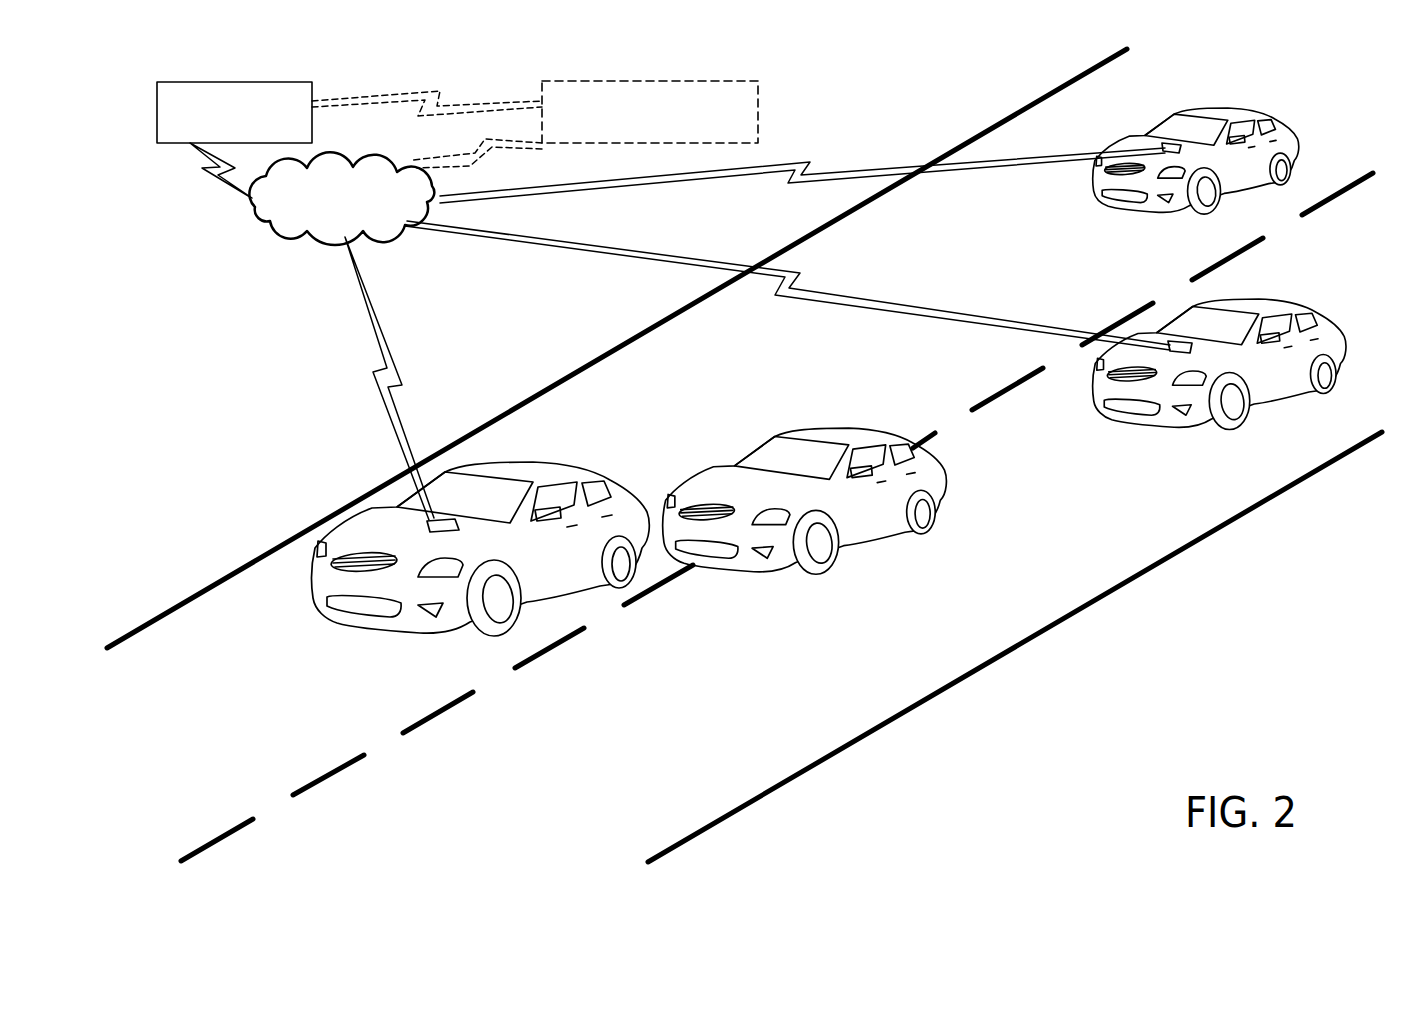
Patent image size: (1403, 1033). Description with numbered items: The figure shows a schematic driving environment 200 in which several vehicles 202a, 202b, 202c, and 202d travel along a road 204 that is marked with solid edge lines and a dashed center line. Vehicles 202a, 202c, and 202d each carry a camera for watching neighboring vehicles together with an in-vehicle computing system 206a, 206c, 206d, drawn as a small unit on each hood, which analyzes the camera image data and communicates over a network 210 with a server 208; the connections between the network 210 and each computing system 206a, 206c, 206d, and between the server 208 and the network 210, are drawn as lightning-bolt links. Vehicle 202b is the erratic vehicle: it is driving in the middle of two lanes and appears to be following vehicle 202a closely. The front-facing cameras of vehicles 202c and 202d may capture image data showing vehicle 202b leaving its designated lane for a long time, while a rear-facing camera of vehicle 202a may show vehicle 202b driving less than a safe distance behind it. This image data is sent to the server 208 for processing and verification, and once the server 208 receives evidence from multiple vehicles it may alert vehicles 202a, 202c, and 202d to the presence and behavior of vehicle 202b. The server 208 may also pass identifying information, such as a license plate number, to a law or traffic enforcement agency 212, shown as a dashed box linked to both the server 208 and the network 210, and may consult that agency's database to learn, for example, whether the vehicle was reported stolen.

The driving environment 200 is at (933, 796).
The vehicle 202a is at (481, 533).
The vehicle 202b is at (822, 428).
The vehicle 202c is at (1219, 352).
The vehicle 202d is at (1196, 149).
The road 204 is at (220, 572).
The in-vehicle computing system 206a is at (460, 535).
The in-vehicle computing system 206c is at (1197, 357).
The in-vehicle computing system 206d is at (1189, 157).
The server 208 is at (234, 112).
The network 210 is at (341, 198).
The law or traffic enforcement agency 212 is at (650, 112).